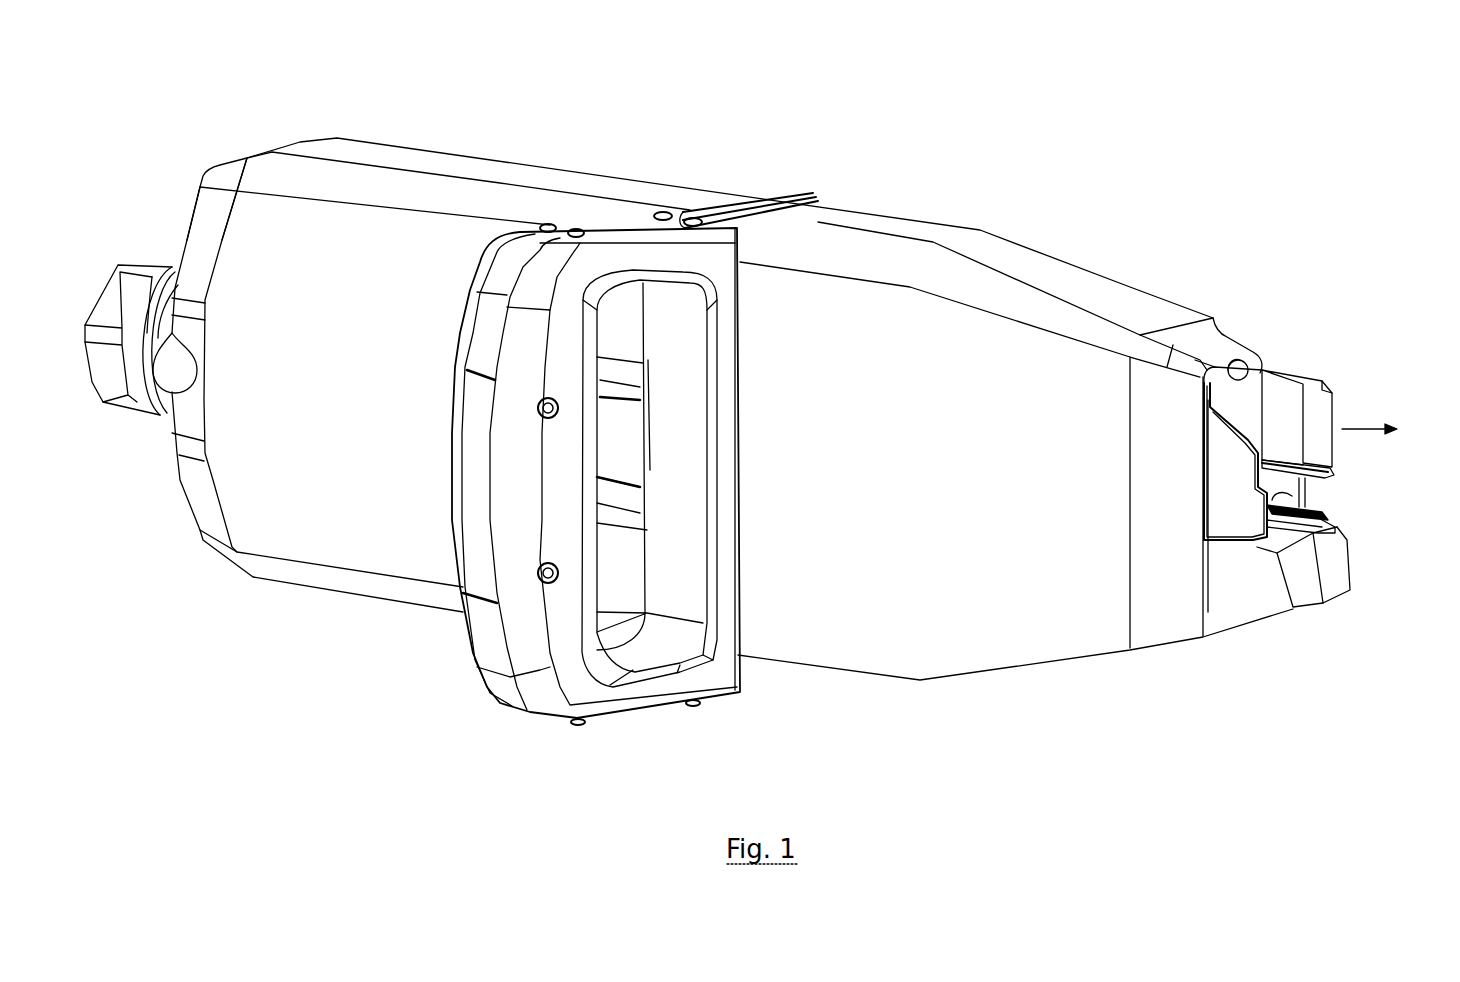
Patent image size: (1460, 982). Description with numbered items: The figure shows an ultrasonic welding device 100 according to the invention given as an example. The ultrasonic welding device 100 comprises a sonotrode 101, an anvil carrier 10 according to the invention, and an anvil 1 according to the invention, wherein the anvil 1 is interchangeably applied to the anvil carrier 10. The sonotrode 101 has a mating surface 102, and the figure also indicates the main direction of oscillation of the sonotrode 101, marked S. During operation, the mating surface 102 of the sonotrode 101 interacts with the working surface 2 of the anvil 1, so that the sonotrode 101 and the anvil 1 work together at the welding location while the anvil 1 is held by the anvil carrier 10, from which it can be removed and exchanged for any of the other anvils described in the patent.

The ultrasonic welding device 100 is at (307, 150).
The anvil carrier 10 is at (1227, 597).
The sonotrode 101 is at (1283, 400).
The mating surface 102 is at (1330, 477).
The working surface 2 is at (1330, 510).
The anvil 1 is at (1303, 597).